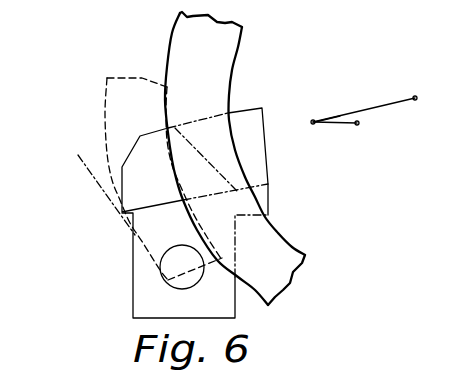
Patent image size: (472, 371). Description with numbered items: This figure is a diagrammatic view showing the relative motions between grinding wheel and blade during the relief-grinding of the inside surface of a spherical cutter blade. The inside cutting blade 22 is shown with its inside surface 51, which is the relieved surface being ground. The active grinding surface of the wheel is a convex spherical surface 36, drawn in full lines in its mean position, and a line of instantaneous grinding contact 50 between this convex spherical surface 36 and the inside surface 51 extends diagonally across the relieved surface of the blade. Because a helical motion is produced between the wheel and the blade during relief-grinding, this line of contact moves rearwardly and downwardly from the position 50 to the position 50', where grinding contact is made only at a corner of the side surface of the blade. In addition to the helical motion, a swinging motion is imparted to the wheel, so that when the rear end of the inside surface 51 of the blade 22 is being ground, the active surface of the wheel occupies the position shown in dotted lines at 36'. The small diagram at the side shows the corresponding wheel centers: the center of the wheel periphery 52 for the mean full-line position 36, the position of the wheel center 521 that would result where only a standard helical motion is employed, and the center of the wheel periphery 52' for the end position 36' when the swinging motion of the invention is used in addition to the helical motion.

The convex spherical surface 36 is at (235, 158).
The end position of the active wheel surface 36' is at (138, 179).
The line of instantaneous grinding contact 50 is at (206, 160).
The end position of the line of grinding contact 50' is at (96, 195).
The inside surface 51 is at (262, 152).
The inside cutting blade 22 is at (142, 285).
The center of the wheel periphery 52 is at (365, 119).
The wheel center position for standard helical motion 521 is at (314, 120).
The center of the wheel periphery for the end position 52' is at (342, 144).